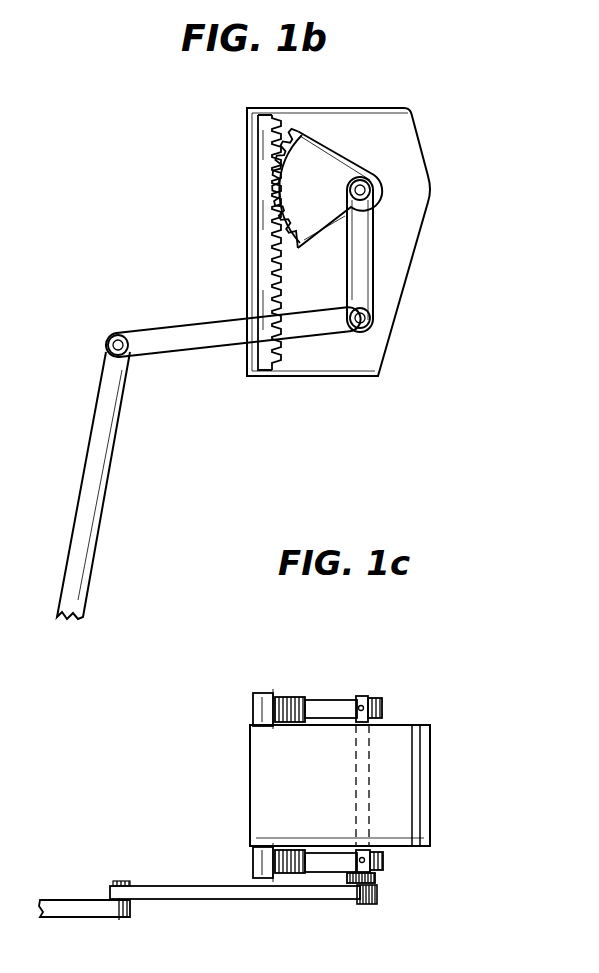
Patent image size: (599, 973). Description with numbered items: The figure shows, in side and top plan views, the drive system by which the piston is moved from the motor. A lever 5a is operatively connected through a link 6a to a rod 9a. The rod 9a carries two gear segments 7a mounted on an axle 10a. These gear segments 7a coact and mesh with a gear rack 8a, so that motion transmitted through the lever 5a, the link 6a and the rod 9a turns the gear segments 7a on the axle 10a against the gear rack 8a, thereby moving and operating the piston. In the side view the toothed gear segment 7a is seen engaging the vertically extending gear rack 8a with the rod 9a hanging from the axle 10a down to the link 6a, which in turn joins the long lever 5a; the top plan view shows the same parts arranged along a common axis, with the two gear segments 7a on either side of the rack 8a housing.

In FIG. 1B, the lever 5a is at (90, 476).
In FIG. 1C, the lever 5a is at (70, 910).
In FIG. 1B, the link 6a is at (200, 340).
In FIG. 1C, the link 6a is at (200, 893).
In FIG. 1B, the gear segments 7a is at (318, 138).
In FIG. 1C, the gear segments 7a is at (322, 705).
In FIG. 1B, the gear rack 8a is at (258, 191).
In FIG. 1C, the gear rack 8a is at (252, 706).
In FIG. 1B, the rod 9a is at (373, 260).
In FIG. 1C, the rod 9a is at (376, 878).
In FIG. 1B, the axle 10a is at (374, 194).
In FIG. 1C, the axle 10a is at (363, 696).